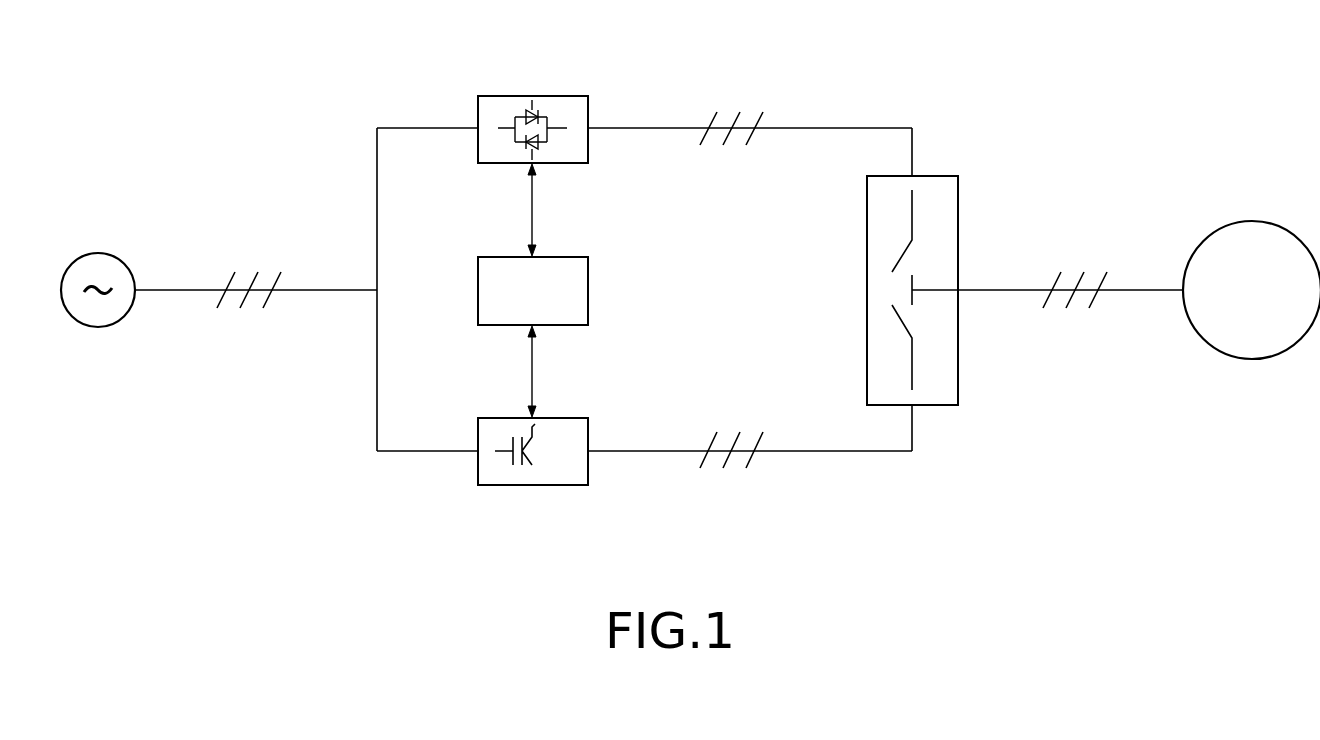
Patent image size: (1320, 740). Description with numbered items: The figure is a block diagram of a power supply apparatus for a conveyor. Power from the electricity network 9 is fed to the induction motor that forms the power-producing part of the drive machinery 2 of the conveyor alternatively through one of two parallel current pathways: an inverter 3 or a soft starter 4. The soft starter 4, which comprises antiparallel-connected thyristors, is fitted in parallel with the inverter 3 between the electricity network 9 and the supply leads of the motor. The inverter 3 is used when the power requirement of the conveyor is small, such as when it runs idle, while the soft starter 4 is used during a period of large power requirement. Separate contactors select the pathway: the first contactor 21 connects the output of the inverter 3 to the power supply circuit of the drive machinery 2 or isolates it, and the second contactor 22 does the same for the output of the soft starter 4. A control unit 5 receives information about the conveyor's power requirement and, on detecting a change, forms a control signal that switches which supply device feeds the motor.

The electricity network 9 is at (100, 253).
The soft starter 4 is at (519, 96).
The control unit 5 is at (588, 283).
The inverter 3 is at (540, 485).
The second contactor 22 is at (914, 251).
The first contactor 21 is at (900, 323).
The drive machinery 2 is at (1214, 352).